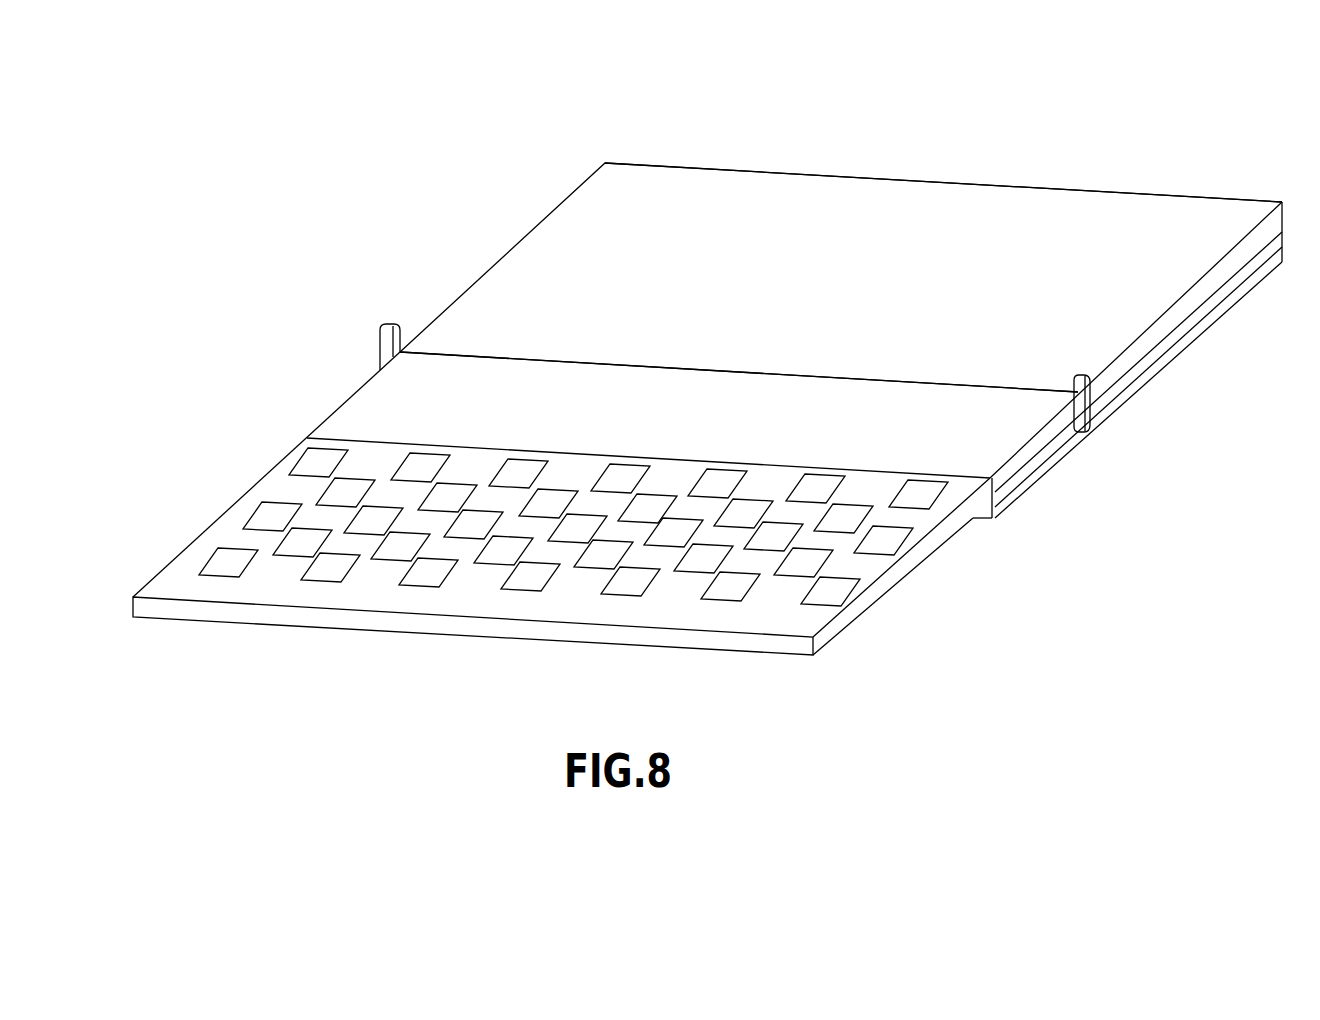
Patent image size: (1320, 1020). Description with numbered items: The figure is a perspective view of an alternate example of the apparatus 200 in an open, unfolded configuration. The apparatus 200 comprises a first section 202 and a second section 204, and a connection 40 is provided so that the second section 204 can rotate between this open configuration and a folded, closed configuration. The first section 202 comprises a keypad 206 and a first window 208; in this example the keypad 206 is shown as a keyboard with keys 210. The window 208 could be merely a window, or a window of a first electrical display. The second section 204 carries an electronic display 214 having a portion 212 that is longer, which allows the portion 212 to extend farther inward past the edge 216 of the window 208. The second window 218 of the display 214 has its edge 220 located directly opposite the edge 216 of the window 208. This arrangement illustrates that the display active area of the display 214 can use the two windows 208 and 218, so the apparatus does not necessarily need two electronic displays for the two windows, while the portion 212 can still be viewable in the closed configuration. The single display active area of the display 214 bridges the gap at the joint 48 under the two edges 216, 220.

The apparatus 200 is at (342, 122).
The first section 202 is at (358, 620).
The second section 204 is at (758, 172).
The keypad 206 is at (828, 590).
The first window 208 is at (390, 403).
The keys 210 is at (878, 532).
The portion 212 is at (1030, 463).
The electronic display 214 is at (1028, 218).
The edge 216 is at (750, 372).
The second window 218 is at (872, 208).
The edge 220 is at (838, 373).
The connection 40 is at (1090, 403).
The joint 48 is at (554, 357).